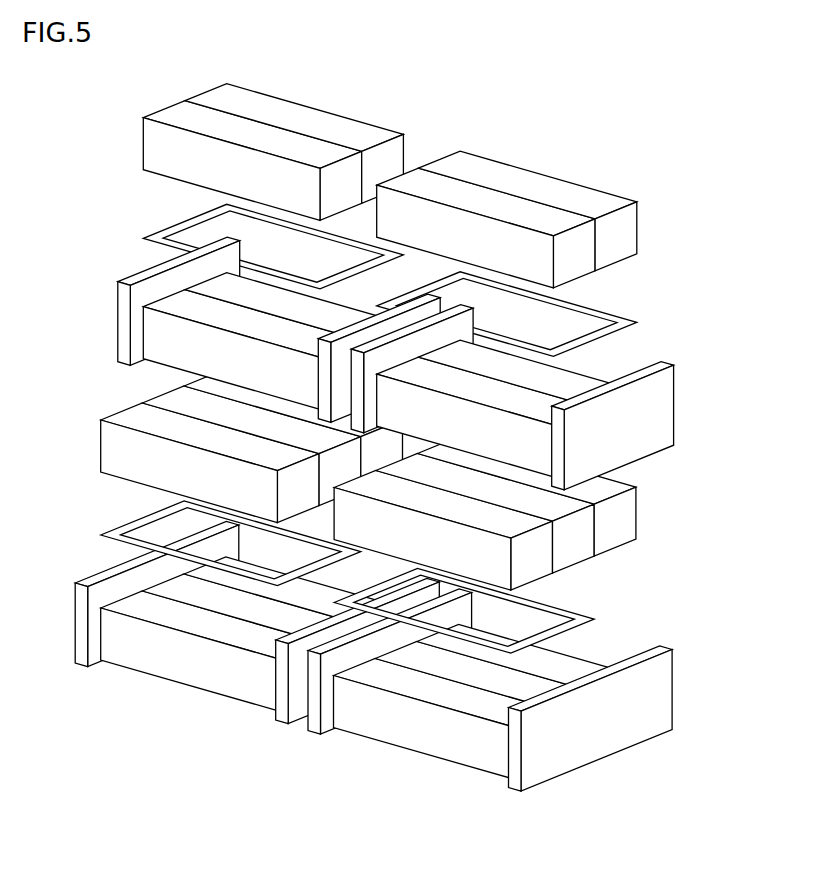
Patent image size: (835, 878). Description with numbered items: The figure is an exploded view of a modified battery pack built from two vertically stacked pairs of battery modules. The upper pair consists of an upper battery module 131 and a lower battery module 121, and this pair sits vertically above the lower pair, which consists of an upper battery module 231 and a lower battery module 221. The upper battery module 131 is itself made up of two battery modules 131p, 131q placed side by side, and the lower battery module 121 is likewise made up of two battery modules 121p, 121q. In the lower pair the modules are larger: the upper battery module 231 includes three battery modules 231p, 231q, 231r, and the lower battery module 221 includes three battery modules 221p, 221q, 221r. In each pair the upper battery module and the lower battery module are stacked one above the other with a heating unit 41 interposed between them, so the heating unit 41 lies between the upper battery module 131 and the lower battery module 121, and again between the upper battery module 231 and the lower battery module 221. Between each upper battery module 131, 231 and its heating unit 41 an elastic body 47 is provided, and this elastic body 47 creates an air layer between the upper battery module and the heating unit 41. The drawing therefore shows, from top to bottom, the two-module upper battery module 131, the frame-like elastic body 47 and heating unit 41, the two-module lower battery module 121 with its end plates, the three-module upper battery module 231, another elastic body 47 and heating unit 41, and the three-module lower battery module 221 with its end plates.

The upper battery module 131 is at (428, 171).
The battery module 131p is at (173, 113).
The battery module 131q is at (216, 97).
The lower battery module 121 is at (416, 361).
The battery module 121p is at (173, 300).
The battery module 121q is at (213, 287).
The heating unit 41 is at (450, 428).
The elastic body 47 is at (735, 290).
The upper battery module 231 is at (443, 485).
The battery module 231p is at (535, 557).
The battery module 231q is at (578, 538).
The battery module 231r is at (619, 522).
The lower battery module 221 is at (429, 675).
The battery module 221p is at (488, 703).
The battery module 221q is at (529, 686).
The battery module 221r is at (579, 668).